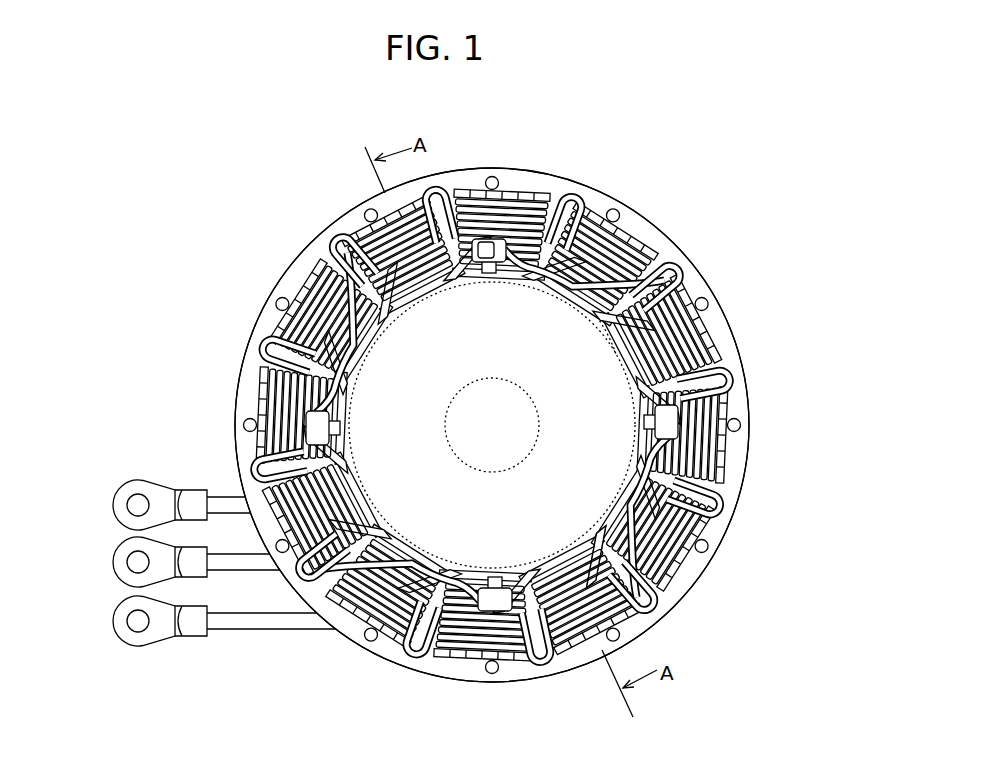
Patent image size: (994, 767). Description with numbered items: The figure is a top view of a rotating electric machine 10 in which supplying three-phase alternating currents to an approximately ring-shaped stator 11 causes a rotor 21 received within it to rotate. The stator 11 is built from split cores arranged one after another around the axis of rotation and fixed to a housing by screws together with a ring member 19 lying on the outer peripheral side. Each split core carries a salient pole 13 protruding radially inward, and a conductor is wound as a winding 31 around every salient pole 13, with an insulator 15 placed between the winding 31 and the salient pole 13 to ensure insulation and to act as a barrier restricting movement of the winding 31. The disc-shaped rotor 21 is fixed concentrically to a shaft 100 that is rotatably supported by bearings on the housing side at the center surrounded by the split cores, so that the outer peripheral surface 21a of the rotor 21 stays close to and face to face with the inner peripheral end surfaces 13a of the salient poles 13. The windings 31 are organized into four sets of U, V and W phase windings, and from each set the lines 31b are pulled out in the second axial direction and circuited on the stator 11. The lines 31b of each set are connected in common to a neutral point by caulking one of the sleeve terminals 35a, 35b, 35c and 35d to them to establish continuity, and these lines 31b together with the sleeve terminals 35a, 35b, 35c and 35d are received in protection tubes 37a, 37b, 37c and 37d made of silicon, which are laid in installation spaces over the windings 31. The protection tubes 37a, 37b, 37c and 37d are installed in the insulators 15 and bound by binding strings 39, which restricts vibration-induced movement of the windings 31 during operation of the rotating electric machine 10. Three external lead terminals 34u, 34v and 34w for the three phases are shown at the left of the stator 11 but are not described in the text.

The rotating electric machine 10 is at (690, 180).
The stator 11 is at (725, 322).
The salient pole 13 is at (650, 513).
The inner peripheral end surface 13a is at (645, 485).
The insulator 15 is at (612, 533).
The ring member 19 is at (645, 232).
The rotor 21 is at (540, 362).
The outer peripheral surface 21a is at (583, 313).
The winding 31 is at (460, 625).
The line 31b is at (415, 603).
The U-phase lead terminal 34u is at (128, 483).
The V-phase lead terminal 34v is at (126, 540).
The W-phase lead terminal 34w is at (124, 600).
The sleeve terminal 35a is at (310, 420).
The sleeve terminal 35b is at (483, 240).
The sleeve terminal 35c is at (680, 420).
The sleeve terminal 35d is at (510, 605).
The protection tube 37a is at (358, 350).
The protection tube 37b is at (567, 263).
The protection tube 37c is at (665, 478).
The protection tube 37d is at (370, 600).
The binding string 39 is at (481, 245).
The shaft 100 is at (511, 431).